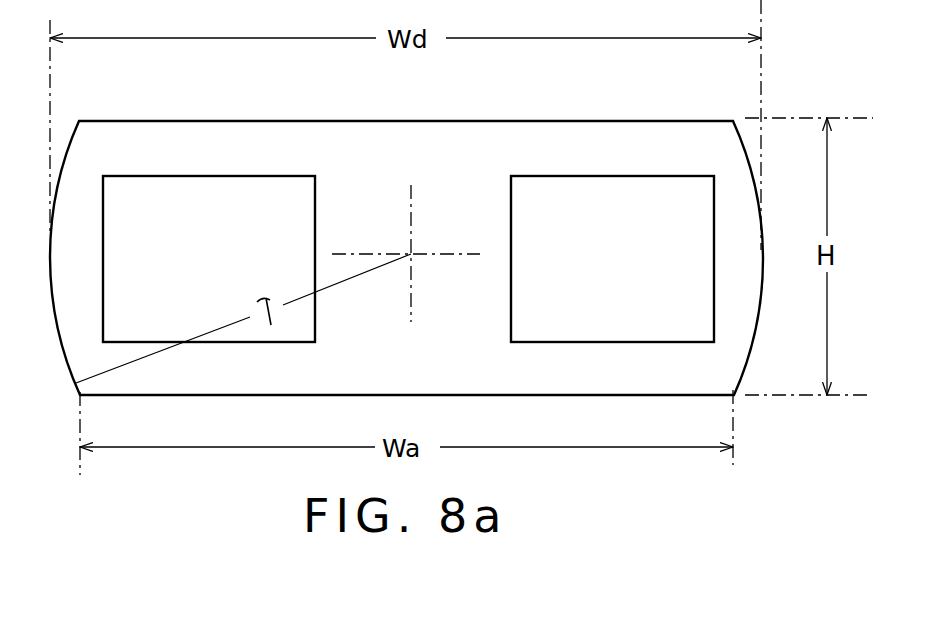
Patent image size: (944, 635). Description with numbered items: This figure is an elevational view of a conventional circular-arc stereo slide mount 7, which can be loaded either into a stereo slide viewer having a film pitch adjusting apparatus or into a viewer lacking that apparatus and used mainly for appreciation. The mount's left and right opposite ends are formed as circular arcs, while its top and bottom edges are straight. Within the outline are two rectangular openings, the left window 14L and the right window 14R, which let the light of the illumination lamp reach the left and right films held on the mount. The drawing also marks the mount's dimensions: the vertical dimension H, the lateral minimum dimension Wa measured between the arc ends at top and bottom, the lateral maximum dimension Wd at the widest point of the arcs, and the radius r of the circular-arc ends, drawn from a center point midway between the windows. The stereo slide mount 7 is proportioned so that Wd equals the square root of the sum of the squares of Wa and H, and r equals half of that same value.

The stereo slide mount 7 is at (545, 134).
The left window 14L is at (163, 177).
The right window 14R is at (597, 177).